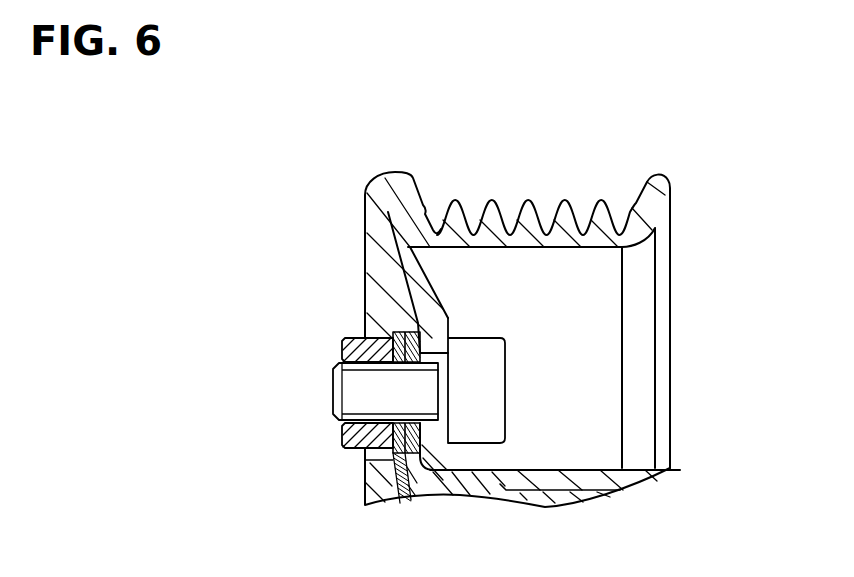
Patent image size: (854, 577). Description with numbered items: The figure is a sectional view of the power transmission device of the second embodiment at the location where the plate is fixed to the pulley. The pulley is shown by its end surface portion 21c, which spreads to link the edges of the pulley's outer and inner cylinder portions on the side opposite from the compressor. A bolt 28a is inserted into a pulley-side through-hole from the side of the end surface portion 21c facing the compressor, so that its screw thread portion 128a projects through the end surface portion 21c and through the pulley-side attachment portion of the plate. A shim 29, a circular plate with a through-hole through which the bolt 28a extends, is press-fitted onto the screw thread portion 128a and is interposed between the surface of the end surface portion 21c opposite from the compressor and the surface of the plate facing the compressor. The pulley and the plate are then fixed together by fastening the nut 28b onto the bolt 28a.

The end surface portion 21c is at (397, 261).
The bolt 28a is at (487, 370).
The nut 28b is at (355, 352).
The shim 29 is at (417, 322).
The screw thread portion 128a is at (412, 368).